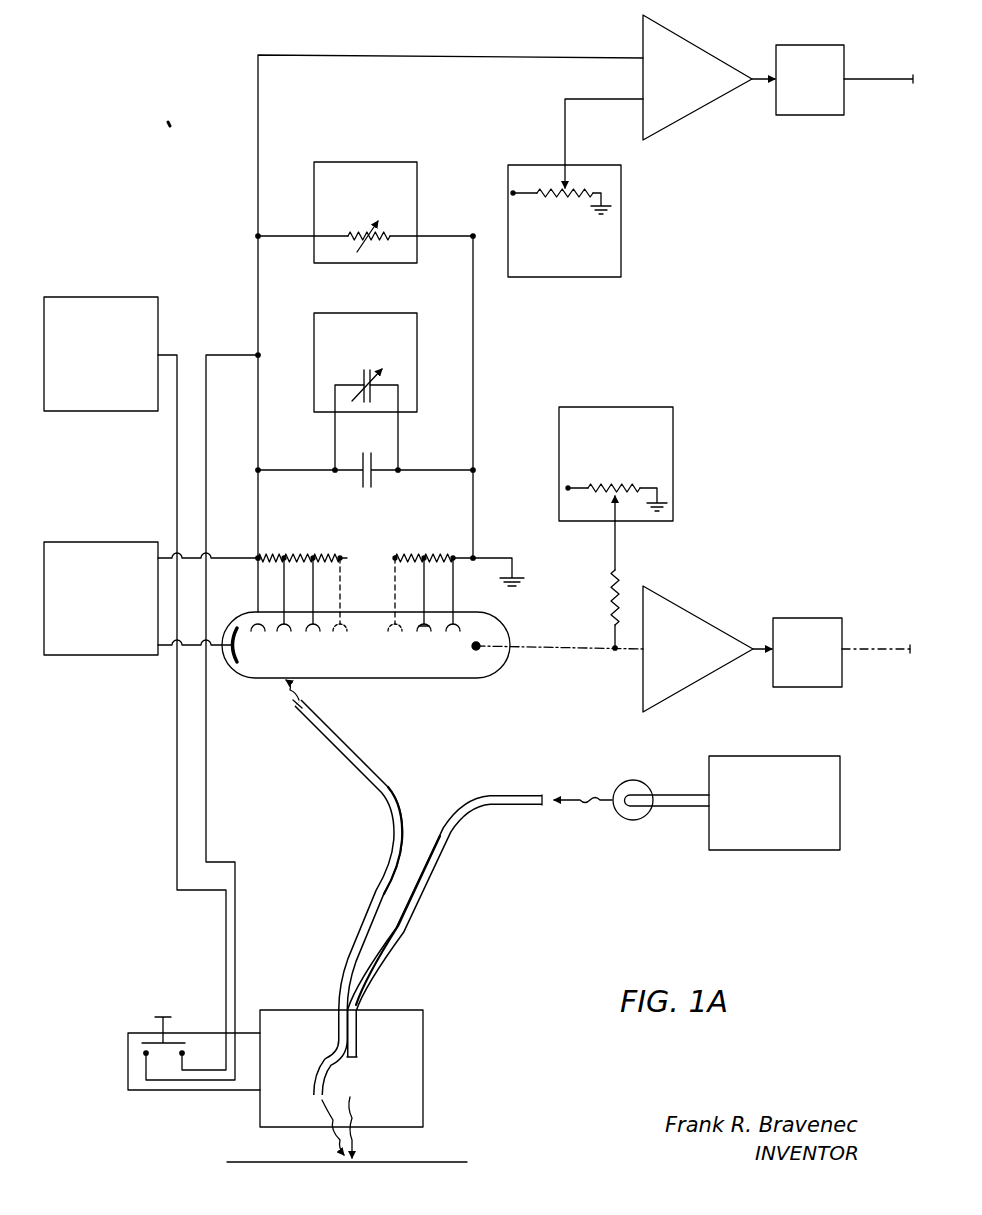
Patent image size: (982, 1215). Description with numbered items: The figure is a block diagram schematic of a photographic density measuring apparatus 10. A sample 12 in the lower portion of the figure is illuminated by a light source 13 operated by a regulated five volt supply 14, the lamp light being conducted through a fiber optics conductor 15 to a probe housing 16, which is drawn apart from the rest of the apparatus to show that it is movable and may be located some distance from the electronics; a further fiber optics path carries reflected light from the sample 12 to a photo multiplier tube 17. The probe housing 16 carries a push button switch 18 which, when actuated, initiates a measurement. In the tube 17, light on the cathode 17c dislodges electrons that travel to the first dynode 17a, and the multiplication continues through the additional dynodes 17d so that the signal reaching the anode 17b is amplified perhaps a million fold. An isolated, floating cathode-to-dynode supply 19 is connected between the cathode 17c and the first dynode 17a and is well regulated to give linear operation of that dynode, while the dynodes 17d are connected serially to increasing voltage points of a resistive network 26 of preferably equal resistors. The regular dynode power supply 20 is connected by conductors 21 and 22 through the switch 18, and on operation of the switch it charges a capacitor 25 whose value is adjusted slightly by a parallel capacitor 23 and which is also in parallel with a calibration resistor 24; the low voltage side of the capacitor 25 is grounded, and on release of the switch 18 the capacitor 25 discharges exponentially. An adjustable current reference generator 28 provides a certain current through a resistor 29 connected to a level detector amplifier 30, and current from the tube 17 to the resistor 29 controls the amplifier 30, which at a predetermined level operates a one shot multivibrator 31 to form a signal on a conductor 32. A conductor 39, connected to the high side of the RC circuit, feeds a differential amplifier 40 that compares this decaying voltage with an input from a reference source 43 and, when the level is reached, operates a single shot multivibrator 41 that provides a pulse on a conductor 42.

The photographic density measuring apparatus 10 is at (169, 120).
The sample 12 is at (448, 1160).
The light source 13 is at (626, 822).
The regulated five volt supply 14 is at (780, 757).
The fiber optics conductor 15 is at (490, 796).
The probe housing 16 is at (365, 765).
The photo multiplier tube 17 is at (460, 680).
The first dynode 17a is at (250, 613).
The anode 17b is at (492, 642).
The cathode 17c is at (229, 665).
The additional dynodes 17d is at (421, 636).
The push button switch 18 is at (163, 1015).
The isolated floating cathode-to-dynode supply 19 is at (104, 541).
The dynode power supply 20 is at (108, 296).
The conductor 21 is at (175, 822).
The conductor 22 is at (206, 827).
The parallel capacitor 23 is at (372, 395).
The calibration resistor 24 is at (337, 242).
The capacitor 25 is at (360, 488).
The resistive network 26 is at (434, 556).
The current reference generator 28 is at (676, 474).
The resistor 29 is at (608, 598).
The level detector amplifier 30 is at (690, 614).
The one shot multivibrator 31 is at (808, 617).
The conductor 32 is at (878, 648).
The conductor 39 is at (258, 125).
The differential amplifier 40 is at (700, 108).
The single shot multivibrator 41 is at (816, 45).
The conductor 42 is at (887, 84).
The reference source 43 is at (622, 216).